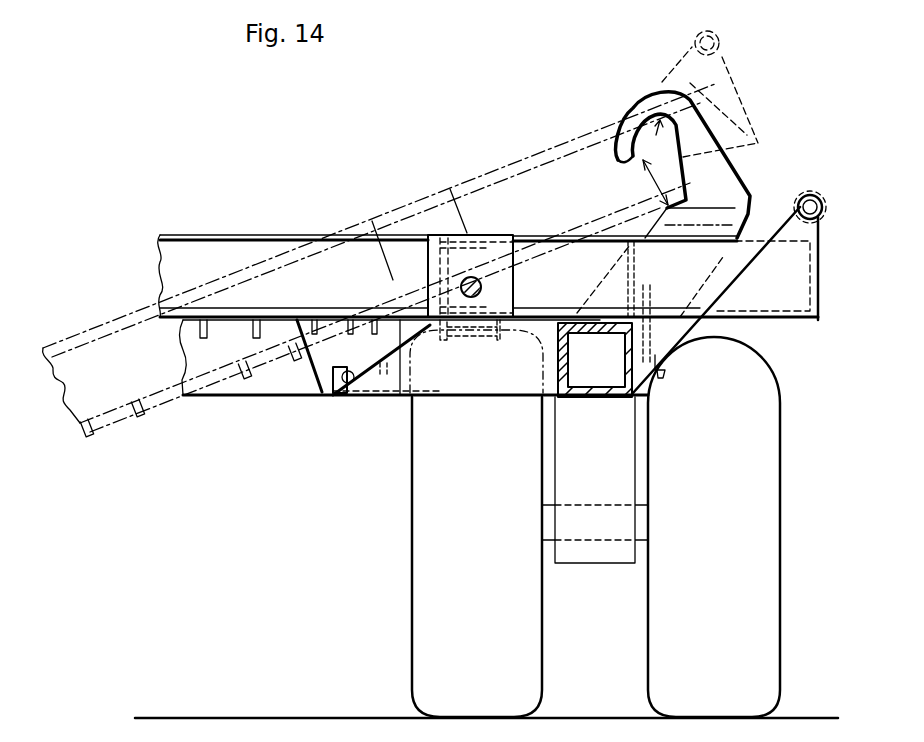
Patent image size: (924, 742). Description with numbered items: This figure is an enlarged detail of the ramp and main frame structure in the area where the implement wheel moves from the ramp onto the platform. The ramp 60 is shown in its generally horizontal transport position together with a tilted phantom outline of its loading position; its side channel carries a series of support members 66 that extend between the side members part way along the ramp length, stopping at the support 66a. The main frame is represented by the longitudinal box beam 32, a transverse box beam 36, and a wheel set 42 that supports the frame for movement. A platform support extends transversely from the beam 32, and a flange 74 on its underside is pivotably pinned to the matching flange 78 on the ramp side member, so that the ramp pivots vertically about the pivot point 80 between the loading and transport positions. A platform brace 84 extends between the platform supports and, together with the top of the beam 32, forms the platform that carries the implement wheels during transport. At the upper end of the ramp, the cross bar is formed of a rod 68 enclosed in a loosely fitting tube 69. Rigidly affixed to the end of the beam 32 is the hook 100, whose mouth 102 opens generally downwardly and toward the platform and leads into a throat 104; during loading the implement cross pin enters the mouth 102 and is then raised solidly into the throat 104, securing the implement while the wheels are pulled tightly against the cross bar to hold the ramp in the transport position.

The ramp 60 is at (216, 250).
The support members 66 is at (178, 333).
The support 66a is at (380, 337).
The transverse box beam 36 is at (226, 392).
The flange 78 is at (351, 366).
The pivot point 80 is at (327, 400).
The platform brace 84 is at (497, 333).
The longitudinal box beam 32 is at (572, 370).
The flange 74 is at (425, 395).
The wheel set 42 is at (770, 410).
The rod 68 is at (820, 214).
The tube 69 is at (803, 196).
The hook 100 is at (713, 190).
The mouth 102 is at (640, 186).
The throat 104 is at (621, 135).